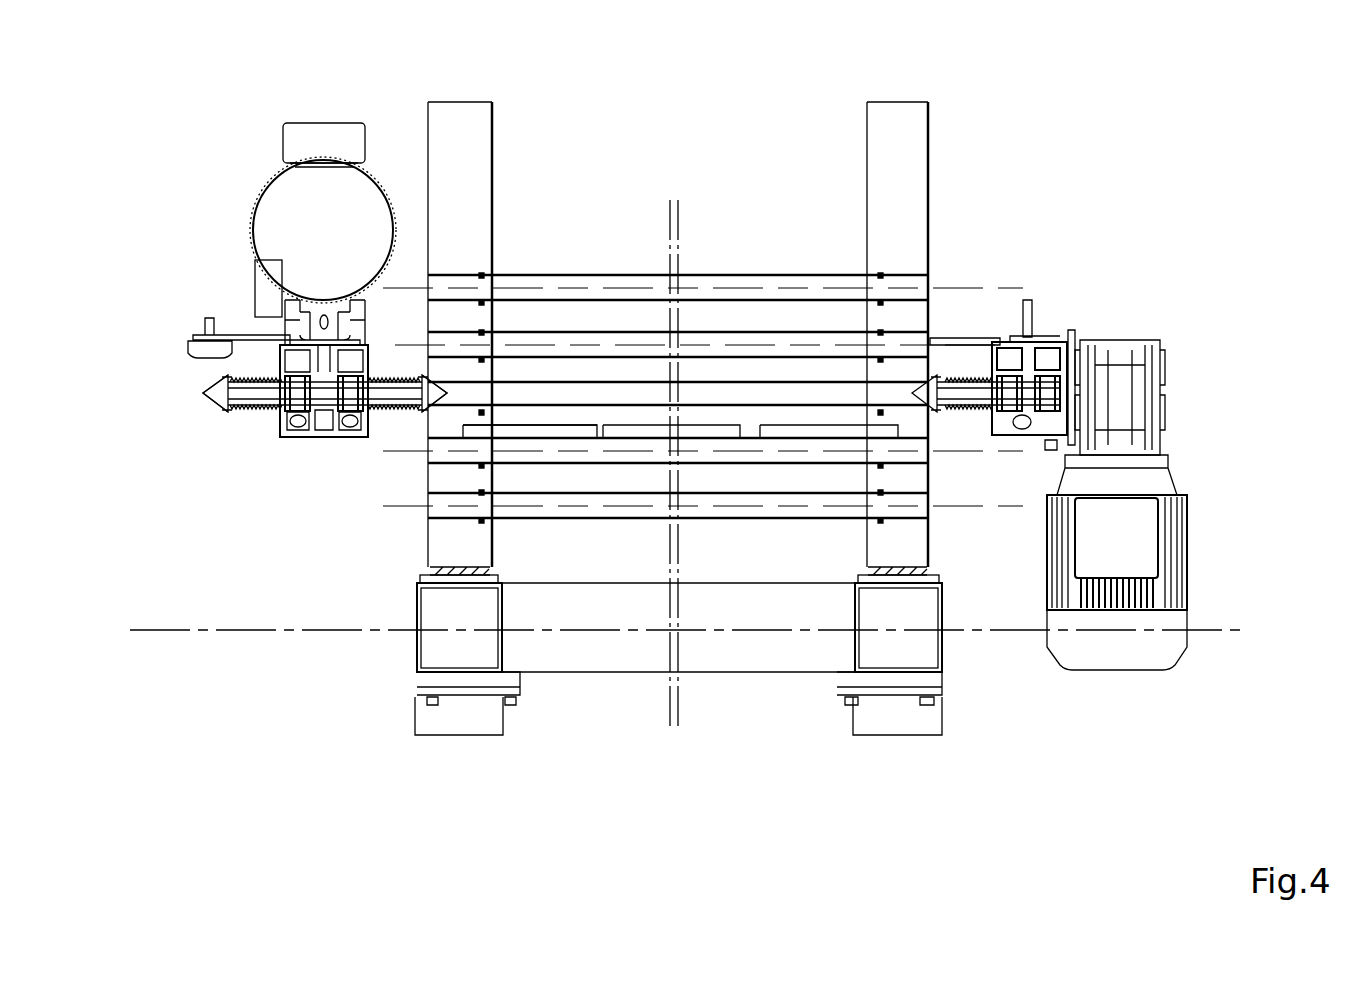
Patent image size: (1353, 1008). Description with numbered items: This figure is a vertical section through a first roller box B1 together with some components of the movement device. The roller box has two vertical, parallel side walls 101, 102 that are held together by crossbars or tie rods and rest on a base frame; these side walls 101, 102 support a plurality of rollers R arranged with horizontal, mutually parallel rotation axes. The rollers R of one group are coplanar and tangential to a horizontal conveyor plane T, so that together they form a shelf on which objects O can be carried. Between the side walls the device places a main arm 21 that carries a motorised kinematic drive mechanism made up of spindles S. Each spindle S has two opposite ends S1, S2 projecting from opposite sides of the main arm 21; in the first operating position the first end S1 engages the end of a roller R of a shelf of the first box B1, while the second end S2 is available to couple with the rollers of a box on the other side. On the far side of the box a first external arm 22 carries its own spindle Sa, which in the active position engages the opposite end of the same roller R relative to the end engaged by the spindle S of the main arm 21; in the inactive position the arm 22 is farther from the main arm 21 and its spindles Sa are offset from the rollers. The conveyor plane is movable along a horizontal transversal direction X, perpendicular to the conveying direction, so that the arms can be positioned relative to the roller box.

The side wall 102 is at (475, 163).
The side wall 101 is at (920, 180).
The first roller box B1 is at (690, 128).
The horizontal conveyor plane T is at (628, 493).
The roller R is at (838, 493).
The first external arm 22 is at (1052, 340).
The spindle of the first external arm Sa is at (937, 378).
The spindle S is at (345, 437).
The first end of spindle S1 is at (422, 410).
The second end of spindle S2 is at (213, 405).
The main arm 21 is at (287, 437).
The transversal direction X is at (682, 619).
The object O is at (808, 432).